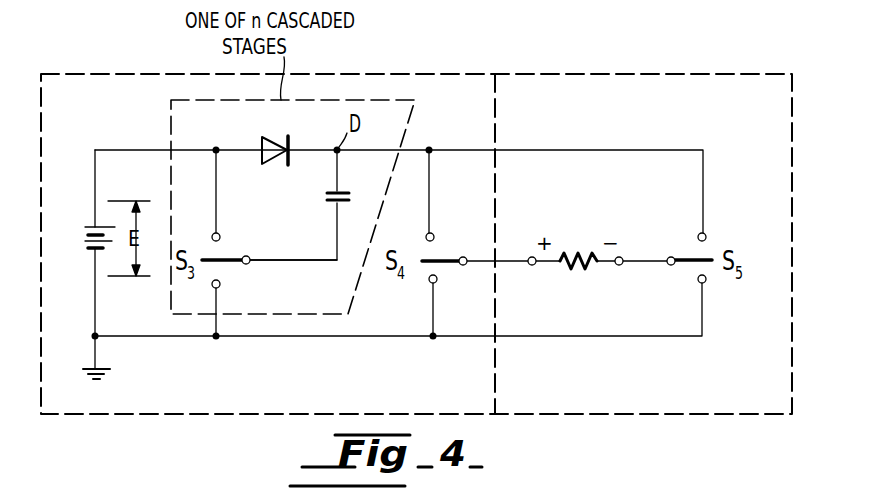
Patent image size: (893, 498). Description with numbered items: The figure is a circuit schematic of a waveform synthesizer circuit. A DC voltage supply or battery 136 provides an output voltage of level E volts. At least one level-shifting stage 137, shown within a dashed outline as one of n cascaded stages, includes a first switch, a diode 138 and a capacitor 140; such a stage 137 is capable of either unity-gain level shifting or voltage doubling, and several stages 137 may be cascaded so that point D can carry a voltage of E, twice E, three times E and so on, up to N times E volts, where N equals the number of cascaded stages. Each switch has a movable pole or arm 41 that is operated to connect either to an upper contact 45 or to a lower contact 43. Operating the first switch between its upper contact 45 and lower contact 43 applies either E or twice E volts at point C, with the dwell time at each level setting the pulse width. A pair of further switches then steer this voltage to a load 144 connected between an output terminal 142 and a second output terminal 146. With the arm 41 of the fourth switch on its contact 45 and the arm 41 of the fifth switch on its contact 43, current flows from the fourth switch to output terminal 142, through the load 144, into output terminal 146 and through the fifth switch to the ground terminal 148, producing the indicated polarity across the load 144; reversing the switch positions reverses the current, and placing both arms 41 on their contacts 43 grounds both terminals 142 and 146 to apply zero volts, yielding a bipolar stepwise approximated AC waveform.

The battery 136 is at (96, 250).
The level-shifting stage 137 is at (415, 103).
The diode 138 is at (263, 138).
The capacitor 140 is at (330, 206).
The output terminal 142 is at (532, 266).
The load 144 is at (590, 266).
The output terminal 146 is at (621, 256).
The ground terminal 148 is at (97, 339).
The upper contact 45 is at (220, 233).
The pole 41 is at (250, 264).
The lower contact 43 is at (220, 287).